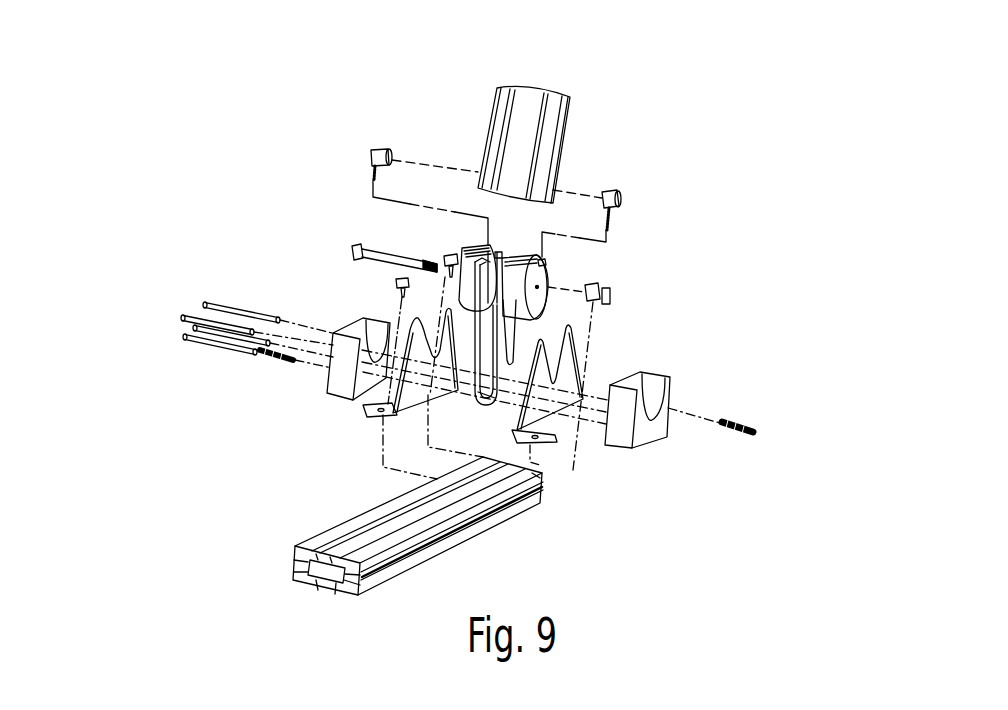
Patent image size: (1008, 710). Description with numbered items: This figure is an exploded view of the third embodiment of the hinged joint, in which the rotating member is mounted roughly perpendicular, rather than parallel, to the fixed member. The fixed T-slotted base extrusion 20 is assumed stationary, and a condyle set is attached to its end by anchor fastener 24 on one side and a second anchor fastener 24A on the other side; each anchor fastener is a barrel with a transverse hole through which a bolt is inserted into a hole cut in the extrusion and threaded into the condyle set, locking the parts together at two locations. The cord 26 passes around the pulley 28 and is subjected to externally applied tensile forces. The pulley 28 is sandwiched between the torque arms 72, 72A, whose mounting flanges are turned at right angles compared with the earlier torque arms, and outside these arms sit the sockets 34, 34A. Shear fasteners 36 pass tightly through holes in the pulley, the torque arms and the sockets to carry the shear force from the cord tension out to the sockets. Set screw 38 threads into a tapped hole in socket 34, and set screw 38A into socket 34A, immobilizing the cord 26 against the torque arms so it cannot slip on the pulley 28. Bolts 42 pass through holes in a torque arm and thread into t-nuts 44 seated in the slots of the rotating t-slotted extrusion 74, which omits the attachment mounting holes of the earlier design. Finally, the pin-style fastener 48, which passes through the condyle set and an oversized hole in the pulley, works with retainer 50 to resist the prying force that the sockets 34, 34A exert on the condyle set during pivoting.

The T-slotted base extrusion 20 is at (523, 127).
The anchor fastener 24 is at (370, 152).
The second anchor fastener 24A is at (613, 192).
The cord 26 is at (484, 395).
The pulley 28 is at (495, 370).
The socket 34 is at (337, 388).
The socket 34A is at (658, 392).
The shear fasteners 36 is at (233, 345).
The set screw 38 is at (273, 358).
The set screw 38A is at (750, 420).
The bolts 42 is at (517, 345).
The t-nuts 44 is at (473, 483).
The pin-style fastener 48 is at (352, 256).
The retainer 50 is at (612, 294).
The torque arm 72 is at (388, 468).
The torque arm 72A is at (547, 433).
The rotating t-slotted extrusion 74 is at (532, 480).